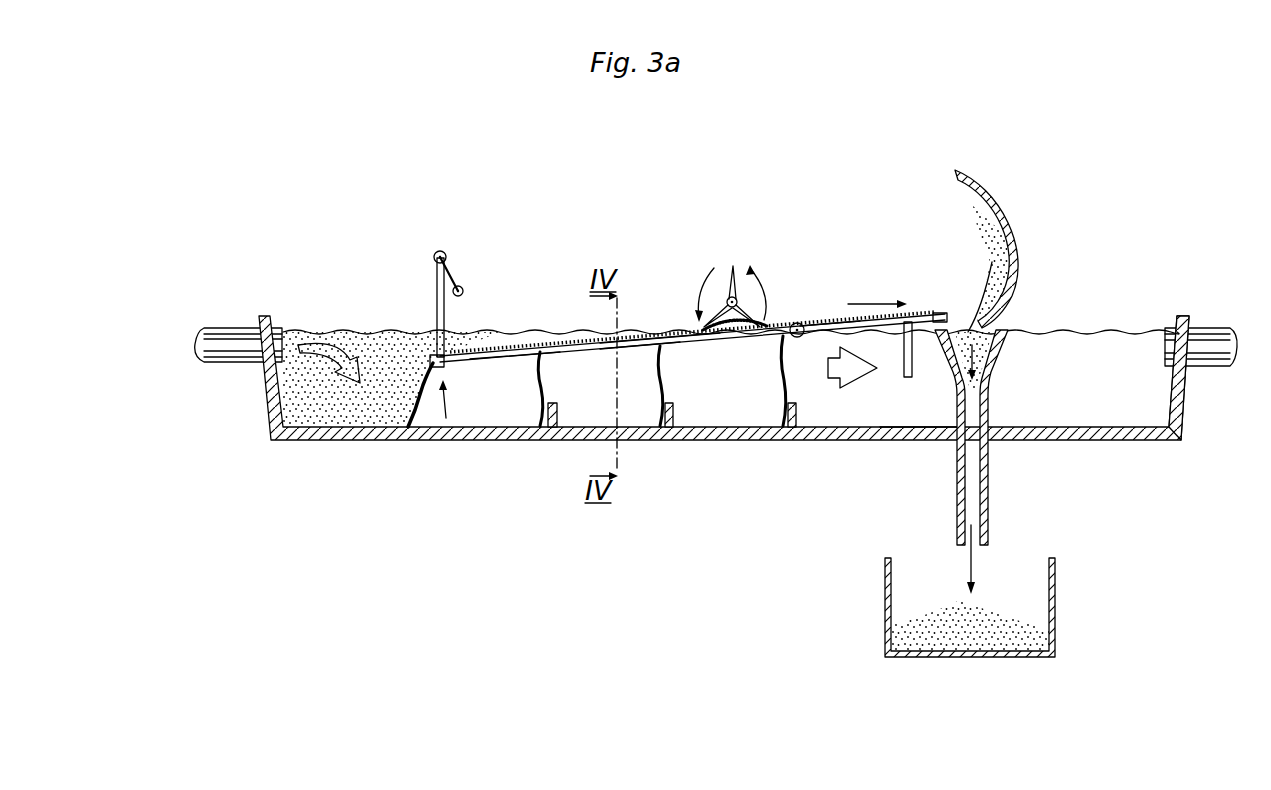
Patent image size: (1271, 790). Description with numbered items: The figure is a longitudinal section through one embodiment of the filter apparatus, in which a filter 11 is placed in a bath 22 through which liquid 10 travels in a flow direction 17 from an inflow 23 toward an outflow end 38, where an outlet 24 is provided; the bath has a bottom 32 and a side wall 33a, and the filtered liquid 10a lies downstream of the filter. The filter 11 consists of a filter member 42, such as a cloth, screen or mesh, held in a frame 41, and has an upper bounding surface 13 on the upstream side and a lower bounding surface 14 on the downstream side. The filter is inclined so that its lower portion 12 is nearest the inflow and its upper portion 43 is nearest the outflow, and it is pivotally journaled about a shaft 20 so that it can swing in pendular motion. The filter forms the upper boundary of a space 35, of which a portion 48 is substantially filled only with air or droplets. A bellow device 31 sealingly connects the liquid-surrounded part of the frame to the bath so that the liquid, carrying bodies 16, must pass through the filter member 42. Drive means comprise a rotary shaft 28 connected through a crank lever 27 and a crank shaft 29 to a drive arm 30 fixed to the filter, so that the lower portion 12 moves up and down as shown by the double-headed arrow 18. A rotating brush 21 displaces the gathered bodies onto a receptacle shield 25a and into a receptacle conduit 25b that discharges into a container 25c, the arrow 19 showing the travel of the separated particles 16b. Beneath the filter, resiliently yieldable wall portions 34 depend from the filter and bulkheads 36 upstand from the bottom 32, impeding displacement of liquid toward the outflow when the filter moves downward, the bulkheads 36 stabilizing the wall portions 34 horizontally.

The liquid 10 is at (310, 340).
The clarified liquid region 10a is at (838, 400).
The filter 11 is at (668, 328).
The lower portion of the filter 12 is at (558, 310).
The upper bounding surface 13 is at (636, 345).
The lower bounding surface 14 is at (518, 358).
The bodies 16 is at (305, 406).
The particles 16b is at (688, 327).
The flow direction 17 is at (325, 358).
The double-headed arrow 18 is at (432, 395).
The arrow 19 is at (870, 304).
The shaft 20 is at (805, 297).
The brush 21 is at (733, 268).
The bath 22 is at (728, 447).
The inflow 23 is at (240, 333).
The outlet 24 is at (1203, 336).
The receptacle shield 25a is at (984, 180).
The receptacle conduit 25b is at (985, 462).
The container 25c is at (883, 600).
The crank lever 27 is at (452, 275).
The rotary shaft 28 is at (461, 288).
The crank shaft 29 is at (440, 251).
The drive arm 30 is at (445, 309).
The bellow device 31 is at (402, 412).
The bottom 32 is at (907, 430).
The side wall 33a is at (702, 400).
The wall portions 34 is at (541, 418).
The space 35 is at (480, 373).
The bulkheads 36 is at (792, 422).
The outflow end 38 is at (1178, 317).
The frame 41 is at (433, 356).
The filter member 42 is at (507, 333).
The upper portion of the filter 43 is at (815, 318).
The air-filled portion of space 48 is at (820, 326).